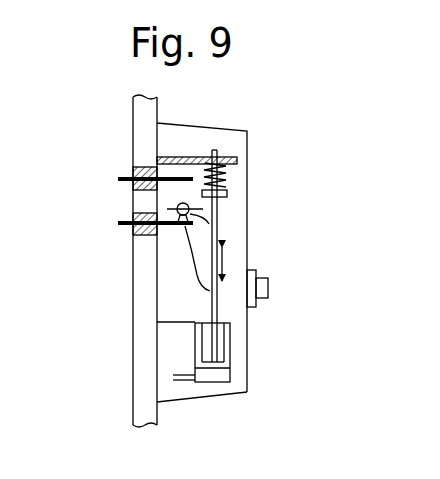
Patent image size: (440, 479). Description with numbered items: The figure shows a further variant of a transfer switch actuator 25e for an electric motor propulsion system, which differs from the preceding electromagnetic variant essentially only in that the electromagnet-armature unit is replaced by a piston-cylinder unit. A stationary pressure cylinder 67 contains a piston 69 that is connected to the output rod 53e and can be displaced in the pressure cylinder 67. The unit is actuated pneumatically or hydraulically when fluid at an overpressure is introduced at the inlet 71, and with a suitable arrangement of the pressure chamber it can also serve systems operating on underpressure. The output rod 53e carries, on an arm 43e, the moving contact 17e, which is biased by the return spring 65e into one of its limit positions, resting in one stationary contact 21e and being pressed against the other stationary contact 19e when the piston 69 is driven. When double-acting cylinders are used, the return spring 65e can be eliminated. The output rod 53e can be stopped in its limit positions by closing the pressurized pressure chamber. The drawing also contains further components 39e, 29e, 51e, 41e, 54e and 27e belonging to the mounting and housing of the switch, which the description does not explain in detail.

The frame wall 39e is at (133, 404).
The housing 29e is at (251, 131).
The bottom plate 51e is at (248, 396).
The bushing 41e is at (145, 166).
The stationary contact 19e is at (184, 182).
The moving contact 17e is at (157, 197).
The arm 43e is at (219, 232).
The return spring 65e is at (224, 172).
The stationary contact 21e is at (176, 224).
The link wire 54e is at (191, 286).
The output rod 53e is at (228, 264).
The bracket 27e is at (268, 287).
The pressure cylinder 67 is at (231, 338).
The piston 69 is at (220, 362).
The actuator 25e is at (232, 378).
The fluid inlet 71 is at (185, 380).